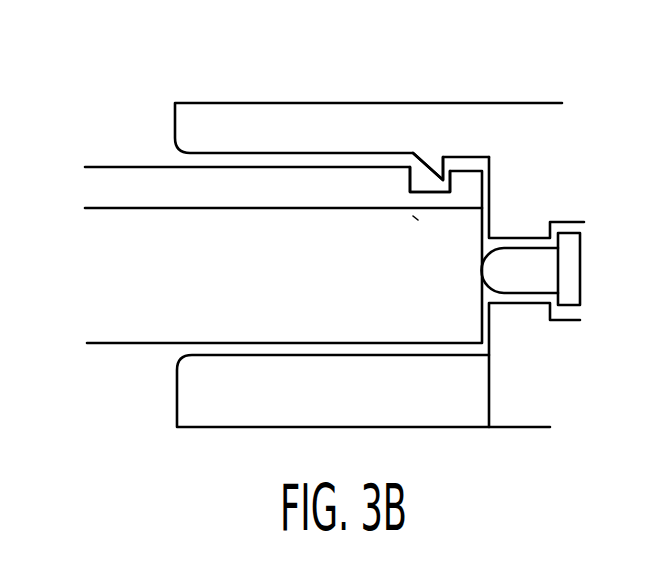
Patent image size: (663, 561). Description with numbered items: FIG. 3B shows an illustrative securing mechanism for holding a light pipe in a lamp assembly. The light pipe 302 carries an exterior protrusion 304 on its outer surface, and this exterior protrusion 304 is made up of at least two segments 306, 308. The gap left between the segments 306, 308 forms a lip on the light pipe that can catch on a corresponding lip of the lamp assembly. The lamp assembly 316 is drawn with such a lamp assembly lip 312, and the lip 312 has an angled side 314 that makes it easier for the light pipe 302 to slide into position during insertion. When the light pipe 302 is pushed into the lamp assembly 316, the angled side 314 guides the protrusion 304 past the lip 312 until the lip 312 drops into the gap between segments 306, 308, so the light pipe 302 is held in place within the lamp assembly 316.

The light pipe 302 is at (128, 287).
The exterior protrusion 304 is at (127, 167).
The segment 306 is at (300, 197).
The segment 308 is at (462, 190).
The lamp assembly lip 312 is at (441, 178).
The angled side 314 is at (424, 182).
The lamp assembly 316 is at (328, 122).